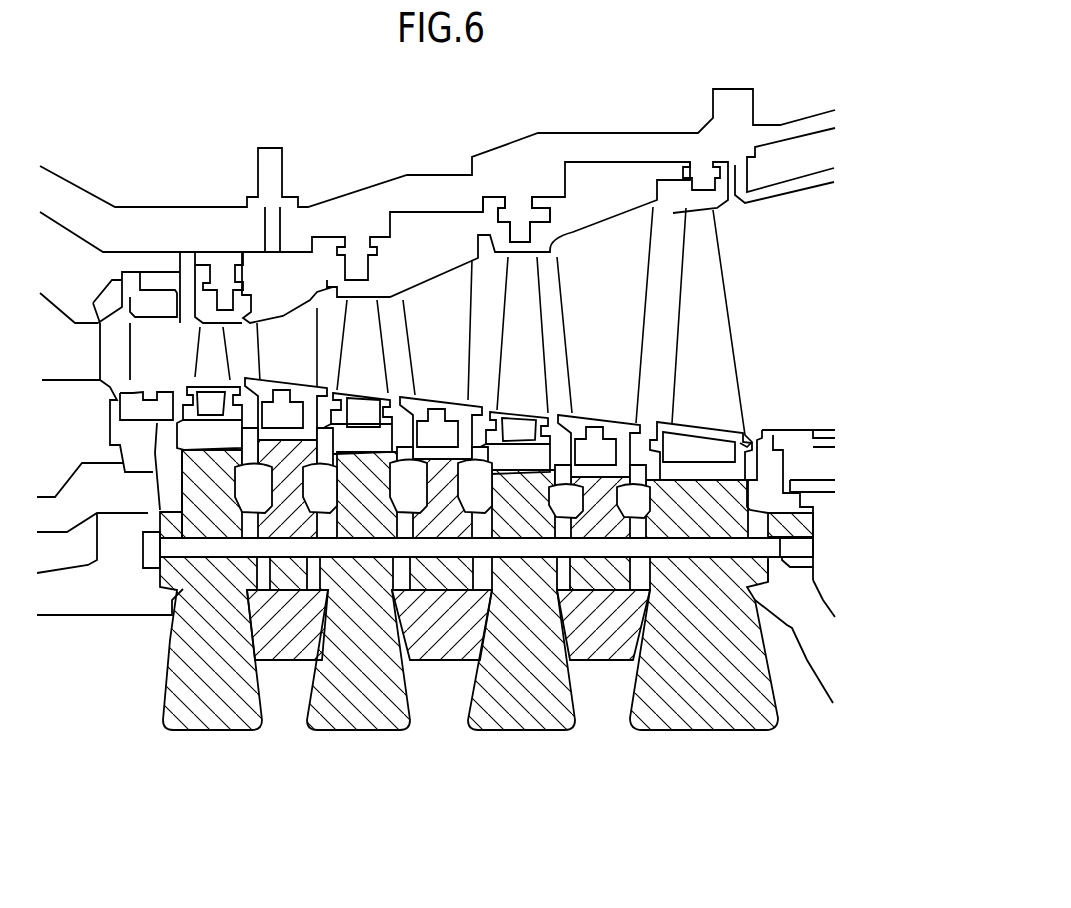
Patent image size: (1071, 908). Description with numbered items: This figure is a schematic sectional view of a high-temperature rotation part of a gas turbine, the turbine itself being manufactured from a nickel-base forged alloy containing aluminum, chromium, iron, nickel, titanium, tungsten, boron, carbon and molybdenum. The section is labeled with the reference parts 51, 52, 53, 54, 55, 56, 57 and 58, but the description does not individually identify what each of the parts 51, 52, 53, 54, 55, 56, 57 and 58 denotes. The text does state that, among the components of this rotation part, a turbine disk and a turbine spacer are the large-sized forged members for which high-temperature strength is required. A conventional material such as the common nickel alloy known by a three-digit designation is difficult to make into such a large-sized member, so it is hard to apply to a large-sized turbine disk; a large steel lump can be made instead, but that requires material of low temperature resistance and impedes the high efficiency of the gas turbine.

The stator vane 51 is at (617, 359).
The stator vane 52 is at (714, 383).
The turbine casing 53 is at (803, 325).
The blade ring 54 is at (541, 183).
The rotor disc 55 is at (705, 705).
The rotor 56 is at (608, 640).
The shaft seal 57 is at (157, 553).
The bearing housing 58 is at (72, 602).